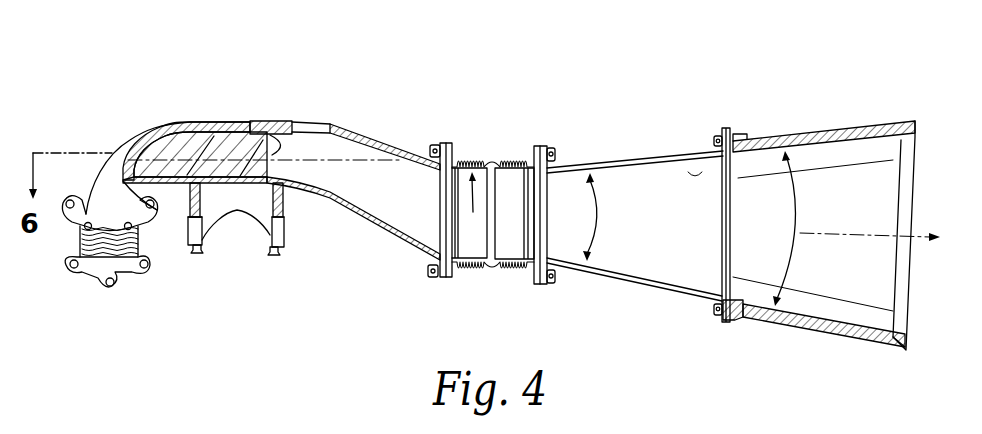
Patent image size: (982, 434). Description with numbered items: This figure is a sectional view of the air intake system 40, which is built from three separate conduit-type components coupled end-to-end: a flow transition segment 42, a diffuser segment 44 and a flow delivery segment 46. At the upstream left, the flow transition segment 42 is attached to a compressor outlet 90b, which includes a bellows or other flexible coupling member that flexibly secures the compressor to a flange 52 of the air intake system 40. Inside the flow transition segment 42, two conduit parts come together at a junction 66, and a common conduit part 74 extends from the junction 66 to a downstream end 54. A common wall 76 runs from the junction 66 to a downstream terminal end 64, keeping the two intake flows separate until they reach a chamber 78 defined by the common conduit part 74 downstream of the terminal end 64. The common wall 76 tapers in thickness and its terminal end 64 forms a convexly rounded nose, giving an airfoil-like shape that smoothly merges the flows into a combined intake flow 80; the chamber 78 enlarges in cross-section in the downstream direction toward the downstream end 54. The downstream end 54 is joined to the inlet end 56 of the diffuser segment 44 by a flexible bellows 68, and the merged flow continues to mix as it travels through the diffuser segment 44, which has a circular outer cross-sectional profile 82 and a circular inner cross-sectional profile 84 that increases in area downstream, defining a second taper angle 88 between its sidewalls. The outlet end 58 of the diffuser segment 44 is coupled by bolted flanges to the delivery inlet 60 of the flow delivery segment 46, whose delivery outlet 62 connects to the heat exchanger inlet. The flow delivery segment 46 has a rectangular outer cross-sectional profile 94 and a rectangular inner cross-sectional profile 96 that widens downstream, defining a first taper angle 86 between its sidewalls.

The air intake system 40 is at (808, 90).
The flow transition segment 42 is at (148, 110).
The diffuser segment 44 is at (641, 146).
The flow delivery segment 46 is at (776, 128).
The flange 52 is at (68, 205).
The downstream end 54 is at (430, 268).
The inlet end 56 is at (538, 286).
The outlet end 58 is at (713, 297).
The delivery inlet 60 is at (730, 323).
The delivery outlet 62 is at (910, 335).
The downstream terminal end 64 is at (277, 140).
The junction 66 is at (140, 150).
The flexible bellows 68 is at (500, 165).
The common conduit part 74 is at (350, 225).
The common wall 76 is at (207, 150).
The chamber 78 is at (375, 188).
The combined intake flow 80 is at (906, 232).
The circular outer cross-sectional profile 82 is at (600, 285).
The circular inner cross-sectional profile 84 is at (696, 172).
The first taper angle 86 is at (795, 179).
The second taper angle 88 is at (596, 218).
The outlet 90b is at (125, 268).
The rectangular outer cross-sectional profile 94 is at (840, 130).
The rectangular inner cross-sectional profile 96 is at (810, 313).